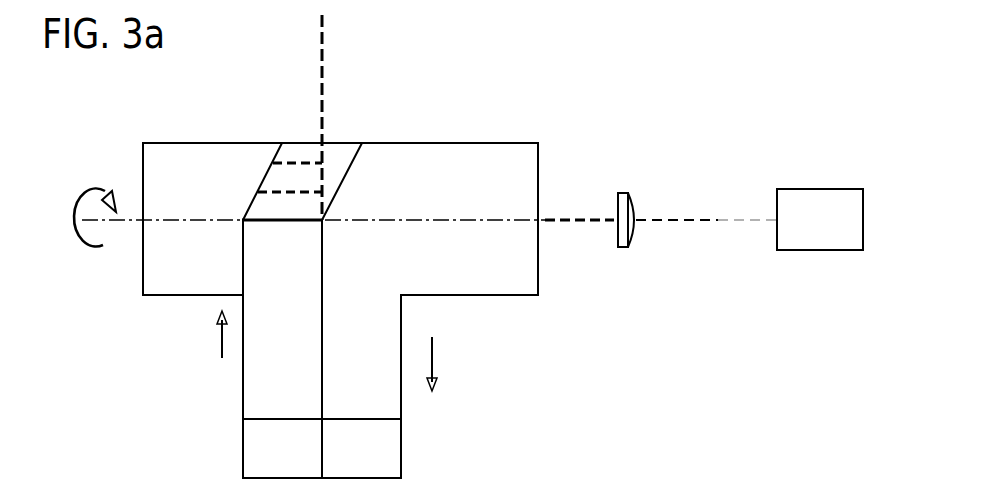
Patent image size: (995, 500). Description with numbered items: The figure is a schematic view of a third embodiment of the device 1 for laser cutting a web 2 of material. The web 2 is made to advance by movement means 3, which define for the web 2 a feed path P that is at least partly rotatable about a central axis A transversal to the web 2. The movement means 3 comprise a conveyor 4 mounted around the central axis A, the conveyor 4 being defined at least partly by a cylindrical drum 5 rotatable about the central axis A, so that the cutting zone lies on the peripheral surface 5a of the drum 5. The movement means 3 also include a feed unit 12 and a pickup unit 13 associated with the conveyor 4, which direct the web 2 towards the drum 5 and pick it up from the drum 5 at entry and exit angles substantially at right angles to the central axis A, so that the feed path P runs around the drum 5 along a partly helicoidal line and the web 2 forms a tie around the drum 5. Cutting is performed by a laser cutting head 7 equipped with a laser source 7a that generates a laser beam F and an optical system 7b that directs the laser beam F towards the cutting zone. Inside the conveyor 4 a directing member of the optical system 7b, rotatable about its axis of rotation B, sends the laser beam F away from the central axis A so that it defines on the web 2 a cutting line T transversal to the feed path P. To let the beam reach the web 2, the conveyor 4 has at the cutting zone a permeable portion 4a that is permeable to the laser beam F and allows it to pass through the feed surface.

The device for laser cutting 1 is at (590, 106).
The web of material 2 is at (255, 392).
The movement means 3 is at (540, 253).
The conveyor 4 is at (541, 282).
The permeable portion 4a is at (332, 156).
The drum 5 is at (525, 143).
The peripheral surface 5a is at (190, 158).
The laser cutting head 7 is at (716, 222).
The laser source 7a is at (800, 210).
The optical system 7b is at (632, 212).
The feed unit 12 is at (295, 457).
The pickup unit 13 is at (377, 457).
The central axis A is at (80, 198).
The axis of rotation B is at (135, 215).
The laser beam F is at (321, 100).
The cutting line T is at (262, 219).
The feed path P is at (282, 383).